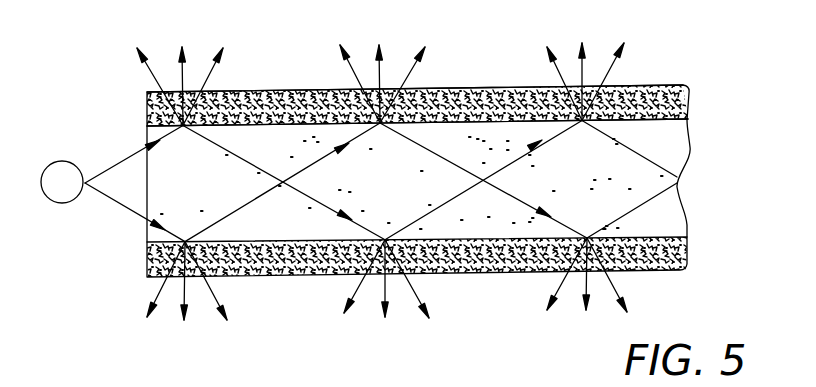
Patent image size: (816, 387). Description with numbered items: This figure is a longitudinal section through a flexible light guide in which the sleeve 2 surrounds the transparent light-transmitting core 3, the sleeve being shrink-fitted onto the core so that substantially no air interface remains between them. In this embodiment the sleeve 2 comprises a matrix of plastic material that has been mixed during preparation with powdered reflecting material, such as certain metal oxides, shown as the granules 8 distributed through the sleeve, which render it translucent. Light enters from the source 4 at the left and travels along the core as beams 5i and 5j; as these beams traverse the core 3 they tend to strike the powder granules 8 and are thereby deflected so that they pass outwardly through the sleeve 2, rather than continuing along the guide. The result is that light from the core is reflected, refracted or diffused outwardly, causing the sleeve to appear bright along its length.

The sleeve 2 is at (246, 100).
The core 3 is at (666, 145).
The light source 4 is at (65, 208).
The beam 5i is at (130, 157).
The beam 5j is at (130, 210).
The light scattering particles 8 is at (512, 110).